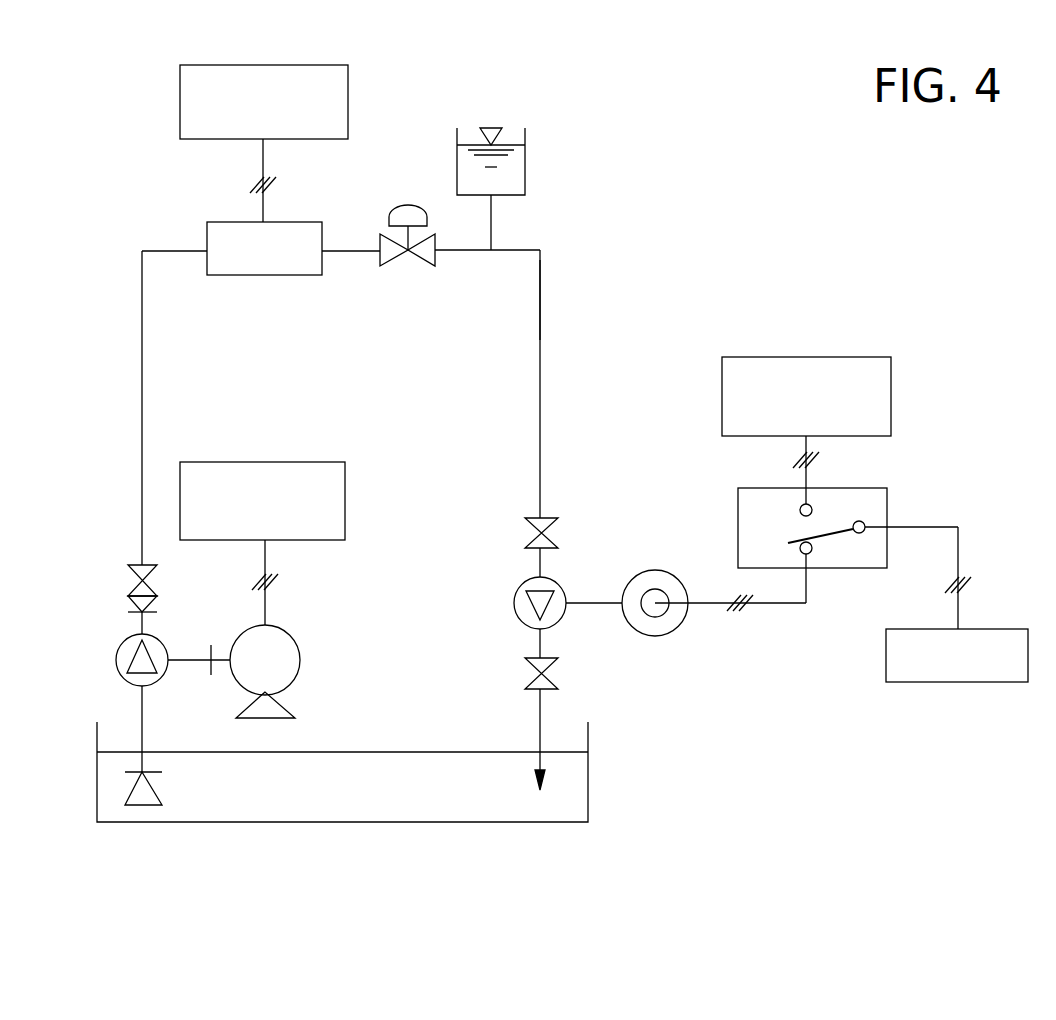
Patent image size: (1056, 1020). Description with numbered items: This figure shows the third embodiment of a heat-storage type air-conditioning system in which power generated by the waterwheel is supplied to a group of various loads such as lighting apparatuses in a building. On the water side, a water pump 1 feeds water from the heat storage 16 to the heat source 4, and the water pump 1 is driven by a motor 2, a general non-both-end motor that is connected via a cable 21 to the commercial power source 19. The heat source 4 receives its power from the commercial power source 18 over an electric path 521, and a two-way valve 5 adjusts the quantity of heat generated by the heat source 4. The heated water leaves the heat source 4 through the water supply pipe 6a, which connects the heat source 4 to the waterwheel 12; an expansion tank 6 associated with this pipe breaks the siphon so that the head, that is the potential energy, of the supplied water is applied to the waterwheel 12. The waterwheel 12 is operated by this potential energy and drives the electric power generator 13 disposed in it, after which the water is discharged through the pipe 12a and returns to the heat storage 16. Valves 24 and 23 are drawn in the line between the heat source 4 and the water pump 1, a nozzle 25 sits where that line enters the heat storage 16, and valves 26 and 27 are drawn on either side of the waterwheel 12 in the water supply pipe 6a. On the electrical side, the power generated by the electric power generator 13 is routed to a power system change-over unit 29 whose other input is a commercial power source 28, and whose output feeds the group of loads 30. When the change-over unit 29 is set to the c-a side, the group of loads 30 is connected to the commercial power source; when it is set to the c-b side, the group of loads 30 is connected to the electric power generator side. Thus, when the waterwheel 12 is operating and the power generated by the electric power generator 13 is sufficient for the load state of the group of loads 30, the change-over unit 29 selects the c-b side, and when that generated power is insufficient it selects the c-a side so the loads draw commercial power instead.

The water pump 1 is at (117, 655).
The motor 2 is at (294, 680).
The heat source 4 is at (310, 222).
The two-way valve 5 is at (414, 207).
The expansion tank 6 is at (525, 163).
The water supply pipe 6a is at (540, 303).
The waterwheel 12 is at (562, 620).
The discharge pipe 12a is at (540, 717).
The electric power generator 13 is at (650, 571).
The heat storage 16 is at (250, 822).
The commercial power source 18 is at (180, 80).
The commercial power source 19 is at (345, 474).
The cable 21 is at (265, 612).
The check valve 23 is at (130, 610).
The valve 24 is at (136, 565).
The nozzle 25 is at (156, 785).
The valve 26 is at (525, 535).
The valve 27 is at (525, 679).
The commercial power source 28 is at (891, 371).
The power system change-over unit 29 is at (887, 497).
The group of loads 30 is at (1005, 682).
The electric path 521 is at (258, 167).